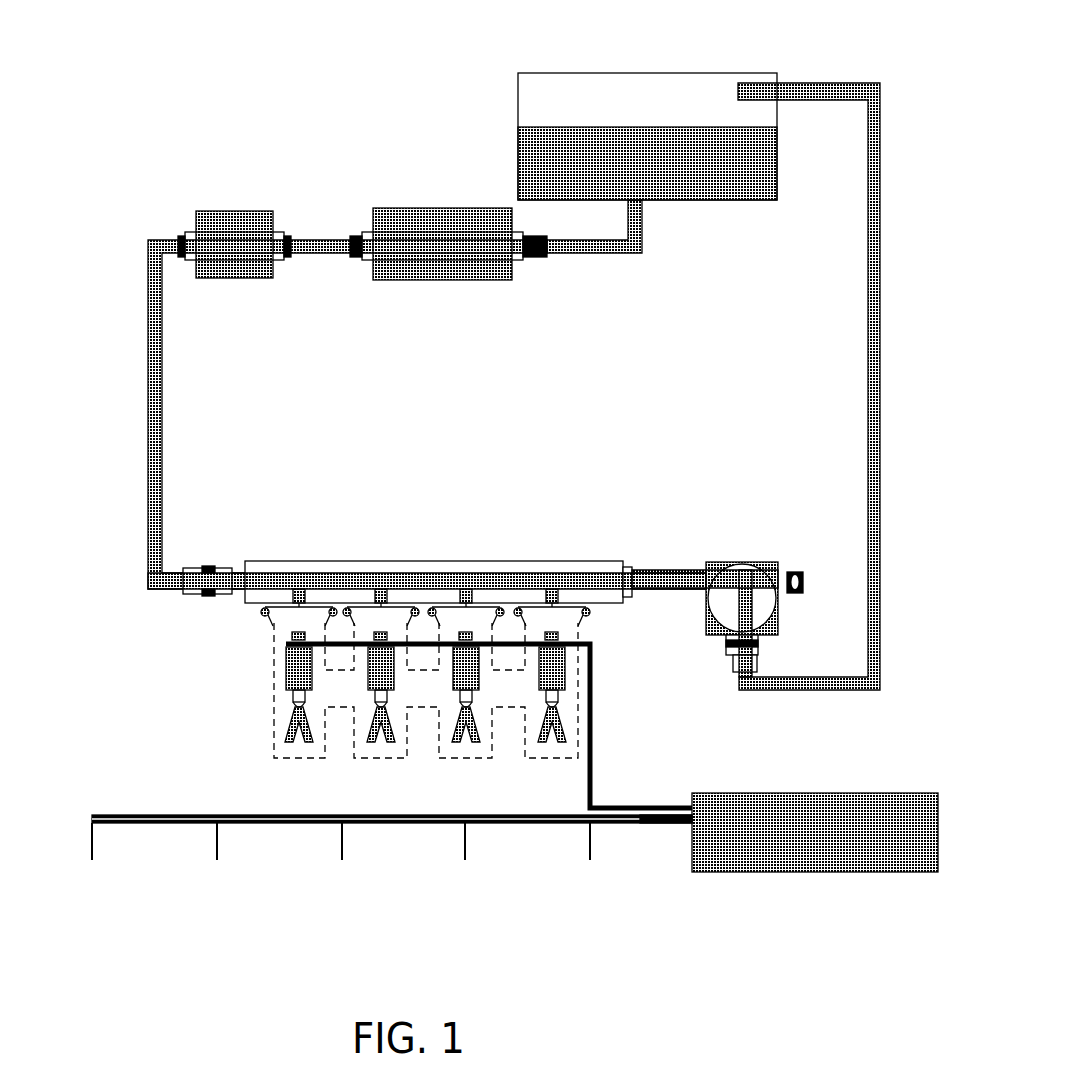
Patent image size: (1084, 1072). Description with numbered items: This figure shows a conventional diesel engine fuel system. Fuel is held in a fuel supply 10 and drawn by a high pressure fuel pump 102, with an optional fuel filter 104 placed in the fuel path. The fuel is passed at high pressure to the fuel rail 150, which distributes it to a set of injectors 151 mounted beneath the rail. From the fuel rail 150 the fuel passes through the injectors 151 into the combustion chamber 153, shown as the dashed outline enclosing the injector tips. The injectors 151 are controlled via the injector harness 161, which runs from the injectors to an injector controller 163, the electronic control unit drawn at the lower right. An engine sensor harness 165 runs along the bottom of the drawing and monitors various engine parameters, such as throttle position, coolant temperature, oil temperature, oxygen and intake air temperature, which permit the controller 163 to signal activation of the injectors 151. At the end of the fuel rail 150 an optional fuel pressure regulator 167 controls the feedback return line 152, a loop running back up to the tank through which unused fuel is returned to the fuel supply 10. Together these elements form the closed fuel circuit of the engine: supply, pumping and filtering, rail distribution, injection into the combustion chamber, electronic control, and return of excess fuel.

The fuel supply 10 is at (647, 73).
The high pressure fuel pump 102 is at (441, 208).
The fuel filter 104 is at (236, 211).
The fuel rail 150 is at (550, 562).
The injectors 151 is at (565, 668).
The feedback return line 152 is at (882, 368).
The combustion chamber 153 is at (290, 718).
The injector harness 161 is at (657, 823).
The injector controller 163 is at (905, 793).
The engine sensor harness 165 is at (217, 815).
The fuel pressure regulator 167 is at (742, 563).